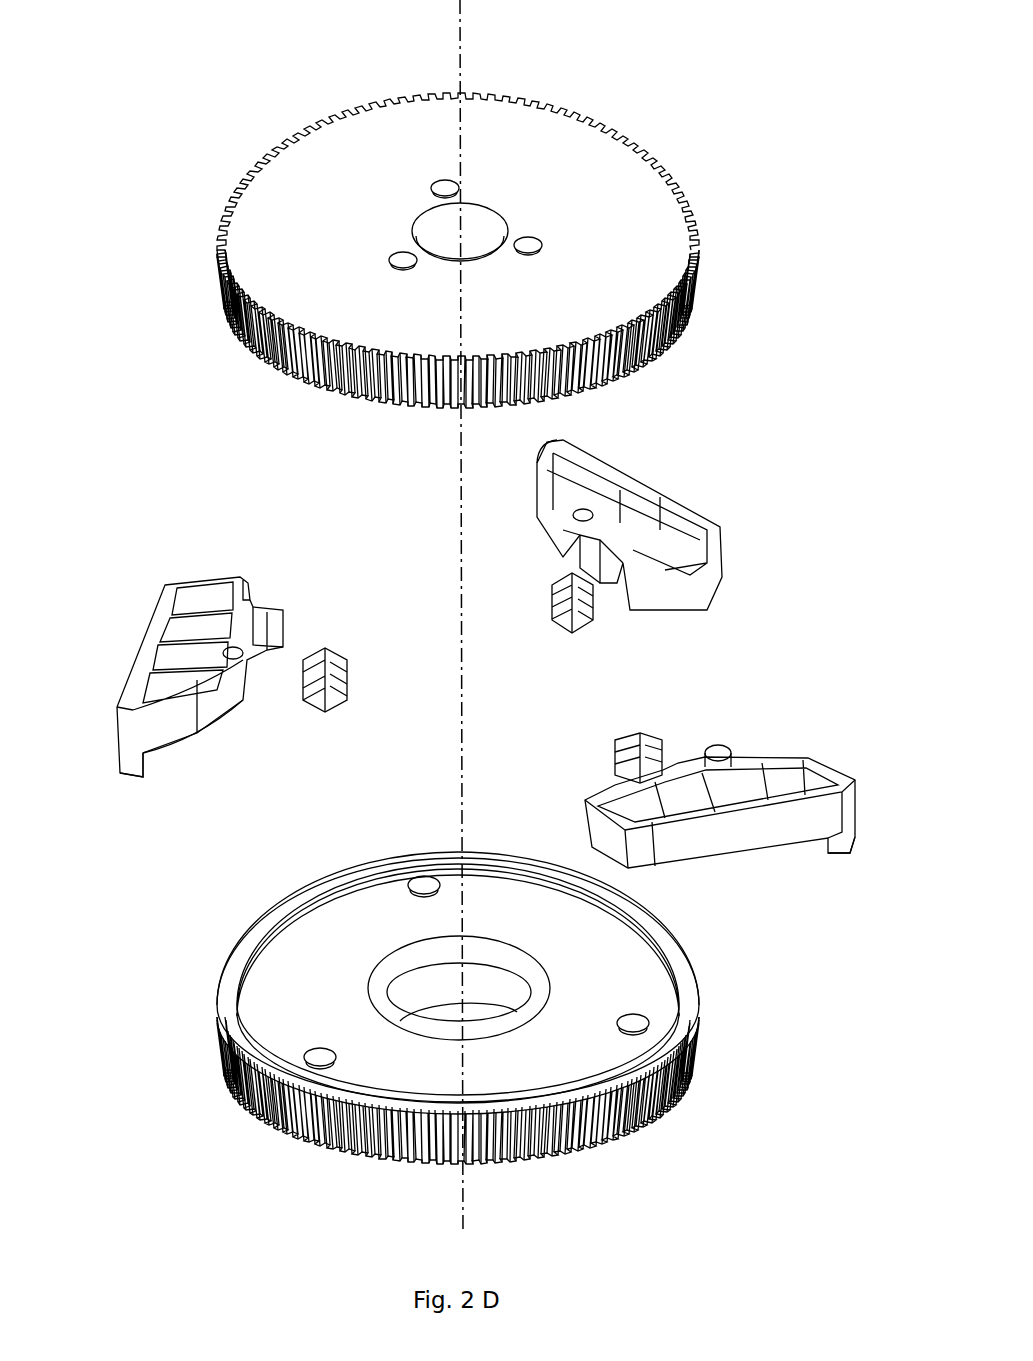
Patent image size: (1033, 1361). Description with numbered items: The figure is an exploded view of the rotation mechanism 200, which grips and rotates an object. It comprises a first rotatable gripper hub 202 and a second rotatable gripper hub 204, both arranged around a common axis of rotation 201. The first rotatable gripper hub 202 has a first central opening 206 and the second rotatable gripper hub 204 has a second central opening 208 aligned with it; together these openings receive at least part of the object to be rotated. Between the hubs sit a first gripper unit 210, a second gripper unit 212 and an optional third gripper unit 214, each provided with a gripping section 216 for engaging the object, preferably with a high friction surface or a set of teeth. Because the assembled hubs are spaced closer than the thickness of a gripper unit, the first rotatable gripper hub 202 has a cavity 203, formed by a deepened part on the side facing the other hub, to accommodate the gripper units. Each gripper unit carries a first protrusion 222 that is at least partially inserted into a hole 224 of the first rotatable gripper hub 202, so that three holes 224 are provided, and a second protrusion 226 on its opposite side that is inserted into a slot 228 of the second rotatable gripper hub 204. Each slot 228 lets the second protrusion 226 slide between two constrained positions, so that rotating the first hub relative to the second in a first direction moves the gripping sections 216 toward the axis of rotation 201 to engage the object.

The rotation mechanism 200 is at (96, 31).
The axis of rotation 201 is at (463, 1213).
The first rotatable gripper hub 202 is at (422, 290).
The cavity 203 is at (353, 416).
The second rotatable gripper hub 204 is at (422, 1070).
The first central opening 206 is at (434, 217).
The second central opening 208 is at (412, 993).
The first gripper unit 210 is at (240, 577).
The second gripper unit 212 is at (613, 467).
The third gripper unit 214 is at (753, 770).
The gripping section 216 is at (347, 660).
The first protrusion 222 is at (585, 513).
The hole 224 is at (452, 186).
The second protrusion 226 is at (597, 437).
The slot 228 is at (427, 890).